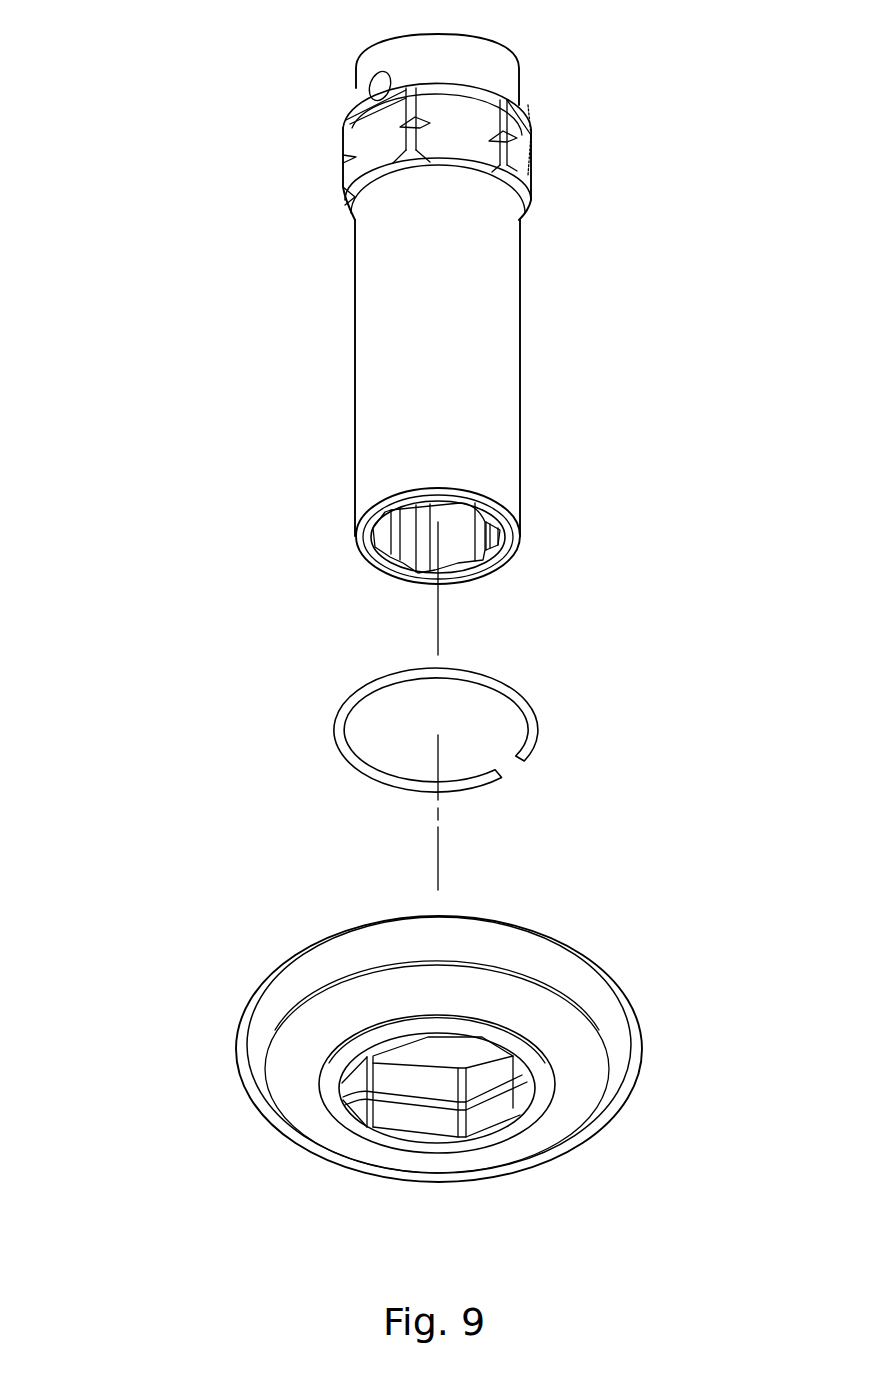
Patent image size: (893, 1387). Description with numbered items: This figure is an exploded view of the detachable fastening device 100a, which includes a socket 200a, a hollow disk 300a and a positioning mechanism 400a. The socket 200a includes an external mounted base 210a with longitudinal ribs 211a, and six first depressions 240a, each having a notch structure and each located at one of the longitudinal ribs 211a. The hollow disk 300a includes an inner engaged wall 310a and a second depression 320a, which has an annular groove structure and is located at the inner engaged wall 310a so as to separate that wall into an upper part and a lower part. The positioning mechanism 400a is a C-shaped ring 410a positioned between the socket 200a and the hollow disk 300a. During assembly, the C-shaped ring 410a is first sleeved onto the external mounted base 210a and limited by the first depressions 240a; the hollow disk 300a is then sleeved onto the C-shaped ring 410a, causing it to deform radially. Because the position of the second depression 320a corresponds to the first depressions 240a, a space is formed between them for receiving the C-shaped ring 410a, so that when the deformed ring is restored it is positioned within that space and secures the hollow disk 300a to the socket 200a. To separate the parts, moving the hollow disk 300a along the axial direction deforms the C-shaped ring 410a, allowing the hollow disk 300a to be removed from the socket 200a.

The detachable fastening device 100a is at (104, 94).
The socket 200a is at (506, 326).
The external mounted base 210a is at (520, 162).
The longitudinal ribs 211a is at (528, 137).
The first depressions 240a is at (528, 133).
The positioning mechanism 400a is at (308, 678).
The C-shaped ring 410a is at (533, 730).
The hollow disk 300a is at (615, 1007).
The inner engaged wall 310a is at (412, 1117).
The second depression 320a is at (498, 1095).